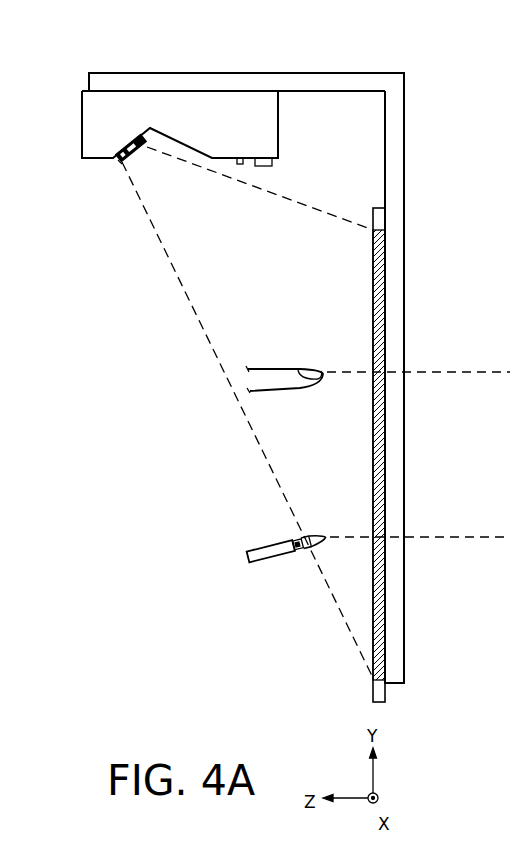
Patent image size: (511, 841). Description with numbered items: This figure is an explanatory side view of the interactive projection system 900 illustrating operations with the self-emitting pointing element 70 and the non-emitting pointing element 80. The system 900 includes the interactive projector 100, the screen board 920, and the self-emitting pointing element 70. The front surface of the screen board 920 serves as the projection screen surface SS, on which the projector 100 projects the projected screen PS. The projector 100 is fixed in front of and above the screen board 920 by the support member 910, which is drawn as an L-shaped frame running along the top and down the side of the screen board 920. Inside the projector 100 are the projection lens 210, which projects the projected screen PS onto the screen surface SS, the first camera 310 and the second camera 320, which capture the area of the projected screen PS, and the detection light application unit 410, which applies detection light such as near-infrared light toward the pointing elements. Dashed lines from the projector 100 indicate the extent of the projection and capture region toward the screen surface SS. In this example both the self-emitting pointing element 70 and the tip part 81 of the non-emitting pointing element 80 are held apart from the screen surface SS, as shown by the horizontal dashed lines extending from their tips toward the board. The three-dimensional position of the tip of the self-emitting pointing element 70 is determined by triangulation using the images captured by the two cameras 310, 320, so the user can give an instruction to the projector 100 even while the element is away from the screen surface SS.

The interactive projector 100 is at (217, 102).
The projection lens 210 is at (120, 163).
The first camera 310 is at (117, 155).
The second camera 320 is at (273, 163).
The detection light application unit 410 is at (240, 165).
The interactive projection system 900 is at (441, 103).
The support member 910 is at (397, 202).
The screen board 920 is at (378, 220).
The self-emitting pointing element 70 is at (245, 555).
The non-emitting pointing element 80 is at (280, 377).
The tip part 81 is at (325, 370).